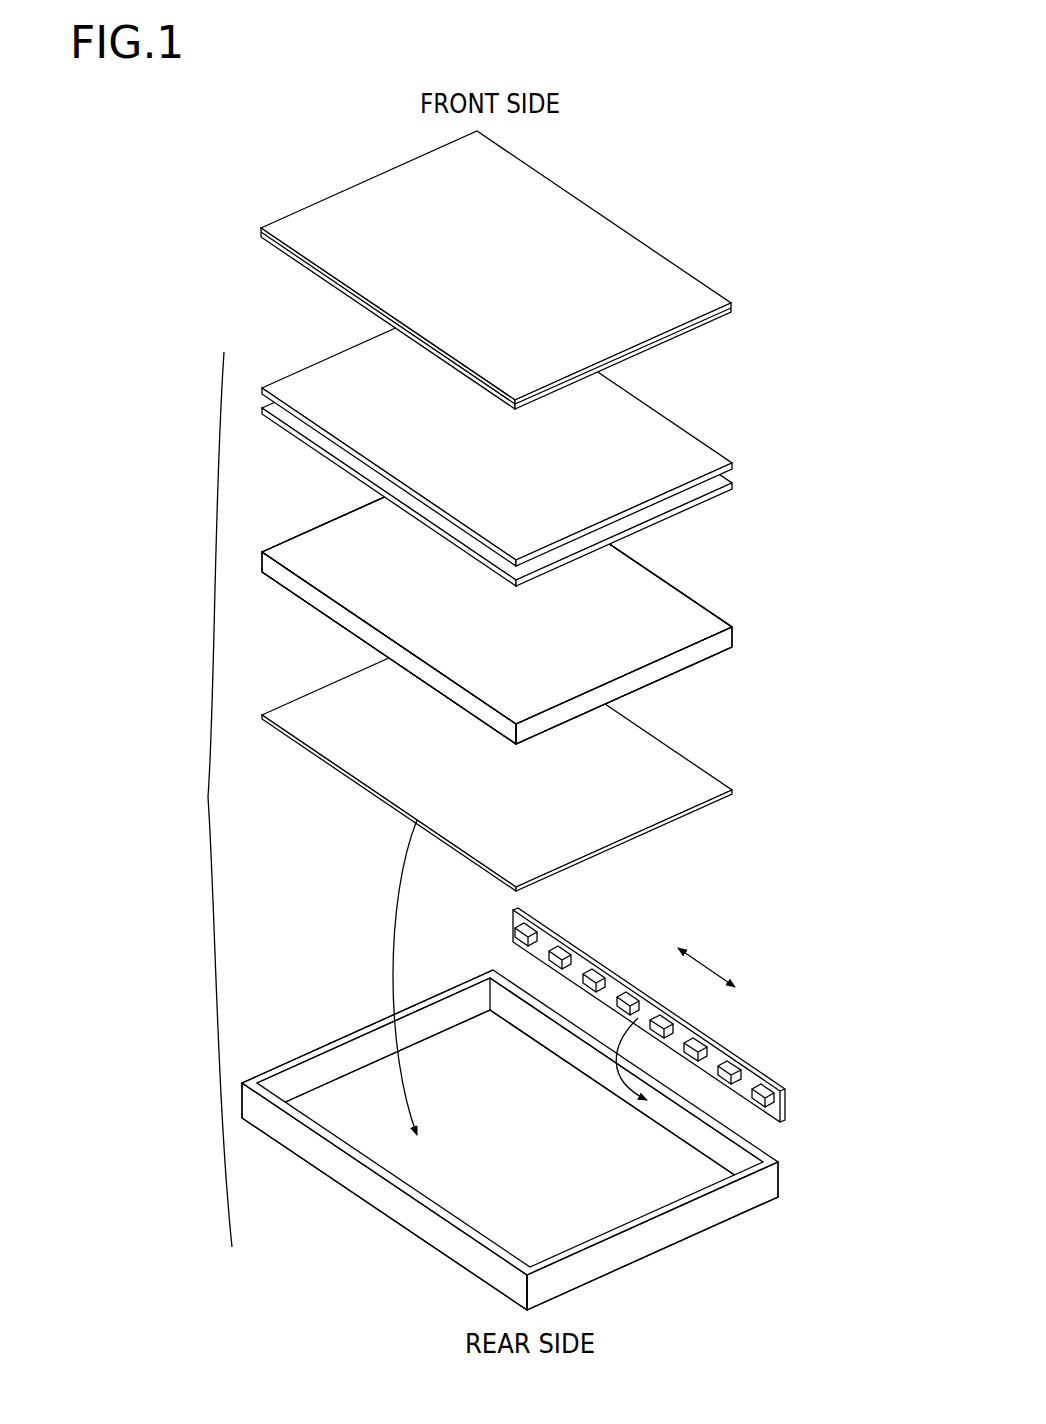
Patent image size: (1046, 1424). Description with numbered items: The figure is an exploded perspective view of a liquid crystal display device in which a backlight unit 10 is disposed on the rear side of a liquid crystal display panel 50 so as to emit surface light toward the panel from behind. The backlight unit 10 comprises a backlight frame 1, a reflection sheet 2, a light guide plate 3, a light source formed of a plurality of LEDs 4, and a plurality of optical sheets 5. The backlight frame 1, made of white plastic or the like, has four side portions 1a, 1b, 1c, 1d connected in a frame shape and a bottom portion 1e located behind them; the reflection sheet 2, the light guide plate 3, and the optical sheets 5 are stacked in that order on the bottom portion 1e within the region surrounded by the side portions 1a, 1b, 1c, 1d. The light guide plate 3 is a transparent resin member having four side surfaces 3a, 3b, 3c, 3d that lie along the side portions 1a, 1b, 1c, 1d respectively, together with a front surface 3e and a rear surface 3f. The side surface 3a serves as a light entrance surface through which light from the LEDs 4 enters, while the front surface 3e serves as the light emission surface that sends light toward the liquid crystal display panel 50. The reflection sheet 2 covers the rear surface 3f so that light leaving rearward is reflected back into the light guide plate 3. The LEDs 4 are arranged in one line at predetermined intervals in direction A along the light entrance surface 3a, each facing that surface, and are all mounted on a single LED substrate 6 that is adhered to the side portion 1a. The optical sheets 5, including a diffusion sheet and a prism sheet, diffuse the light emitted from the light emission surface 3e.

The backlight frame 1 is at (780, 1179).
The side portion 1a is at (757, 1143).
The side portion 1b is at (660, 1237).
The side portion 1c is at (377, 1197).
The side portion 1d is at (370, 1030).
The bottom portion 1e is at (508, 1196).
The reflection sheet 2 is at (735, 791).
The light guide plate 3 is at (736, 637).
The light entrance surface 3a is at (703, 604).
The side surface 3b is at (690, 657).
The side surface 3c is at (308, 597).
The side surface 3d is at (297, 540).
The light emission surface 3e is at (625, 617).
The rear surface 3f is at (660, 683).
The LED 4 is at (528, 924).
The optical sheet 5 is at (735, 464).
The LED substrate 6 is at (787, 1107).
The backlight unit 10 is at (202, 799).
The liquid crystal display panel 50 is at (278, 193).
The direction A is at (706, 962).